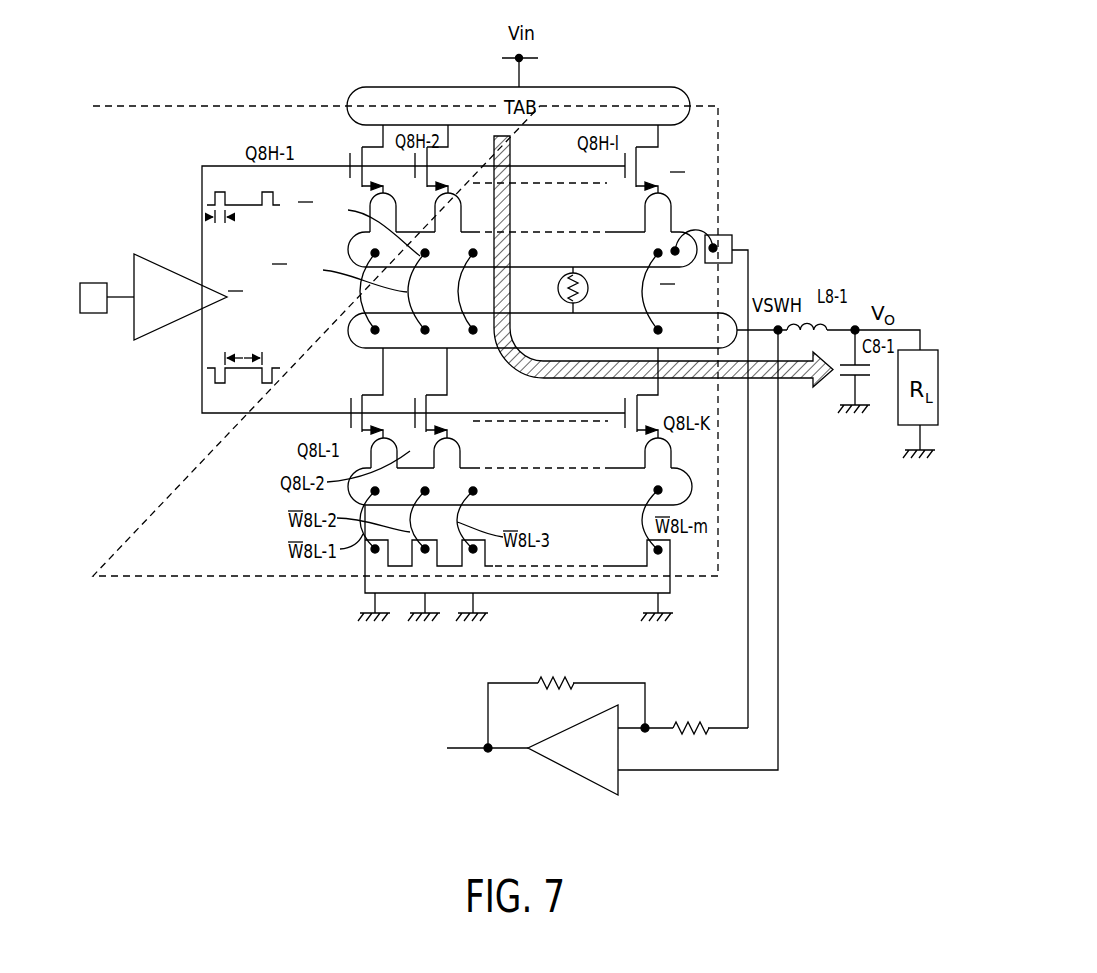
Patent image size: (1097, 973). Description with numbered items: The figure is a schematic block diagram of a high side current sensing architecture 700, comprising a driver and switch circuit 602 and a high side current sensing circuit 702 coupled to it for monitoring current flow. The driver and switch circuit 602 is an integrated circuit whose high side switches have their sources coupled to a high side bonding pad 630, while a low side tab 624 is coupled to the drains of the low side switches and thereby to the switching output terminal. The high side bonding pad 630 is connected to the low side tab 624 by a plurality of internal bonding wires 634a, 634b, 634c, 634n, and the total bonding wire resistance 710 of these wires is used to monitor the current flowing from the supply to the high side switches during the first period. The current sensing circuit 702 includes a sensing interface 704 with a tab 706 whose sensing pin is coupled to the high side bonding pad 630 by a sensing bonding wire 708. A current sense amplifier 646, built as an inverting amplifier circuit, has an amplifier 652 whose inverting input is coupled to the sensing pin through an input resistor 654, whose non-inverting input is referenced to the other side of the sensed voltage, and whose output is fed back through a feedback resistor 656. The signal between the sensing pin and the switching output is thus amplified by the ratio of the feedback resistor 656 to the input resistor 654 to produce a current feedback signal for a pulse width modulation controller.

The current sensing architecture 700 is at (126, 101).
The driver and switch circuit 602 is at (136, 581).
The high side bonding pad 630 is at (348, 248).
The low side tab 624 is at (348, 340).
The high side bonding wire 634a is at (360, 295).
The high side bonding wire 634b is at (458, 292).
The high side bonding wire 634c is at (471, 250).
The high side bonding wire 634n is at (656, 252).
The total resistance RBL of the high side bonding wires 710 is at (586, 306).
The sensing bonding wire 708 is at (695, 228).
The sensing pin tab 706 is at (733, 238).
The sensing interface 704 is at (773, 202).
The high side current sensing circuit 702 is at (782, 547).
The current sense amplifier 646 is at (597, 749).
The amplifier 652 is at (568, 772).
The input resistor 654 is at (693, 732).
The feedback resistor 656 is at (545, 694).